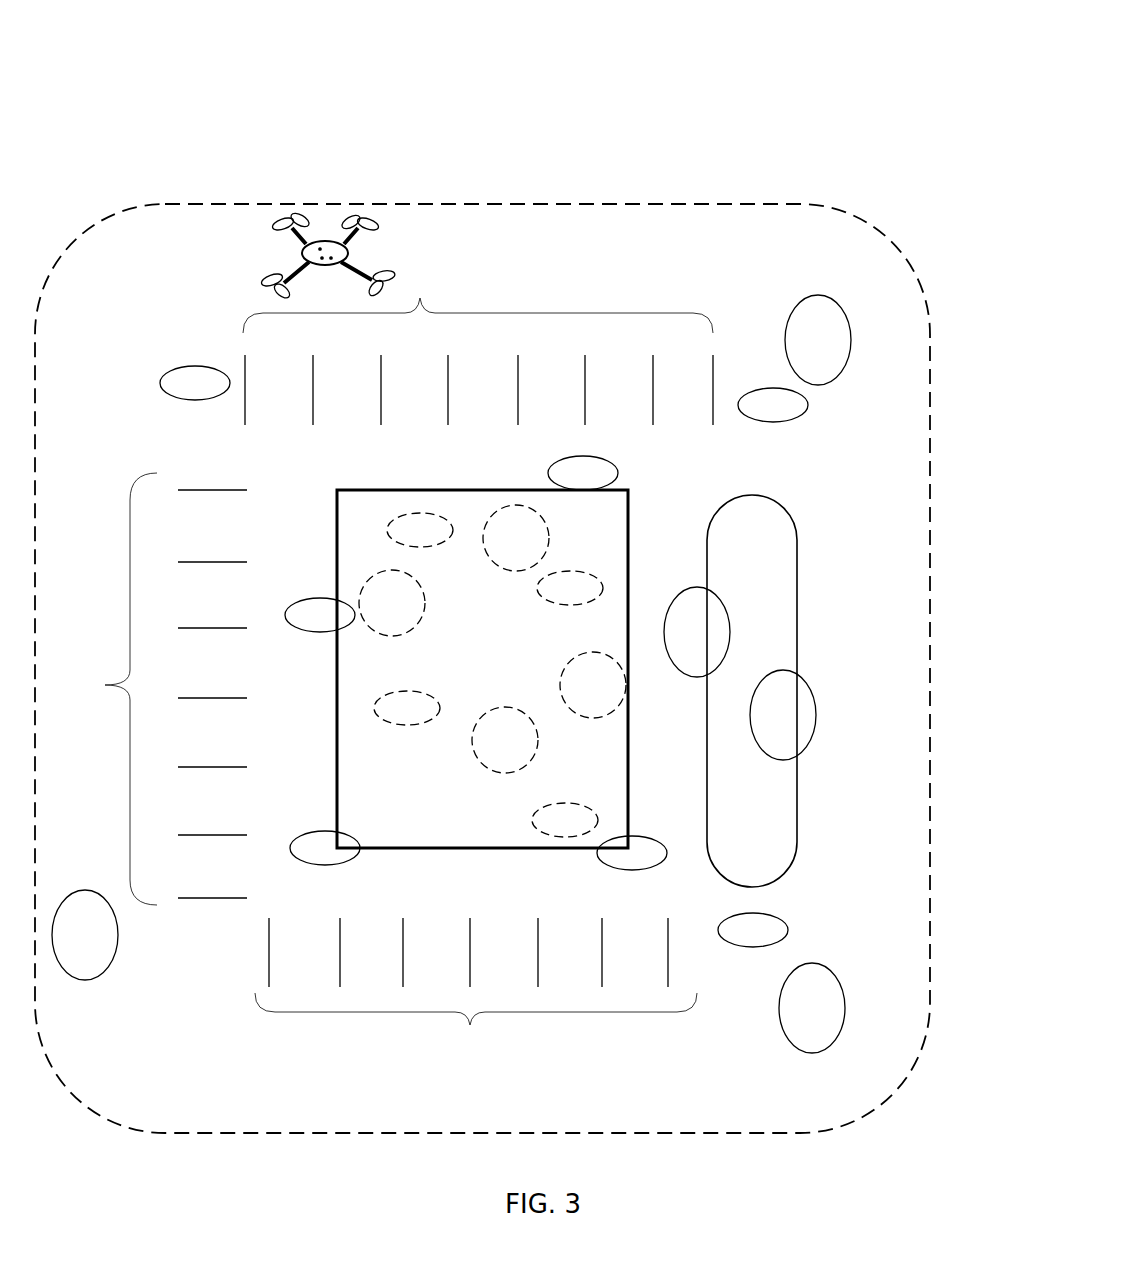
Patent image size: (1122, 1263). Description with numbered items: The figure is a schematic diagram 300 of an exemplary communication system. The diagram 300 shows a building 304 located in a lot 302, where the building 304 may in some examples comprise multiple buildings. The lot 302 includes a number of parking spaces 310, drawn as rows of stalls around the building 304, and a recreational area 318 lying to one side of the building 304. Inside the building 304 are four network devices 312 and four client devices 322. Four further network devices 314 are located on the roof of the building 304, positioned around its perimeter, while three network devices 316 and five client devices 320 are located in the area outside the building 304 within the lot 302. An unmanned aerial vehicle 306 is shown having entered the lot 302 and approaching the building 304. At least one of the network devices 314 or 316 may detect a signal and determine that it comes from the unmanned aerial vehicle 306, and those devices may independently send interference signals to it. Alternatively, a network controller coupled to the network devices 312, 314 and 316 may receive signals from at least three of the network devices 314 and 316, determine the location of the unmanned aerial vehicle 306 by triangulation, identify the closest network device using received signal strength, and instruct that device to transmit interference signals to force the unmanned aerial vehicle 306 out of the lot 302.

The diagram 300 is at (653, 82).
The lot 302 is at (850, 1097).
The building 304 is at (482, 669).
The unmanned aerial vehicle 306 is at (331, 242).
The parking spaces 310 is at (503, 313).
The network devices 312 is at (440, 548).
The network devices 314 is at (618, 470).
The network devices 316 is at (193, 402).
The recreational area 318 is at (797, 550).
The client devices 320 is at (451, 674).
The client devices 322 is at (492, 639).